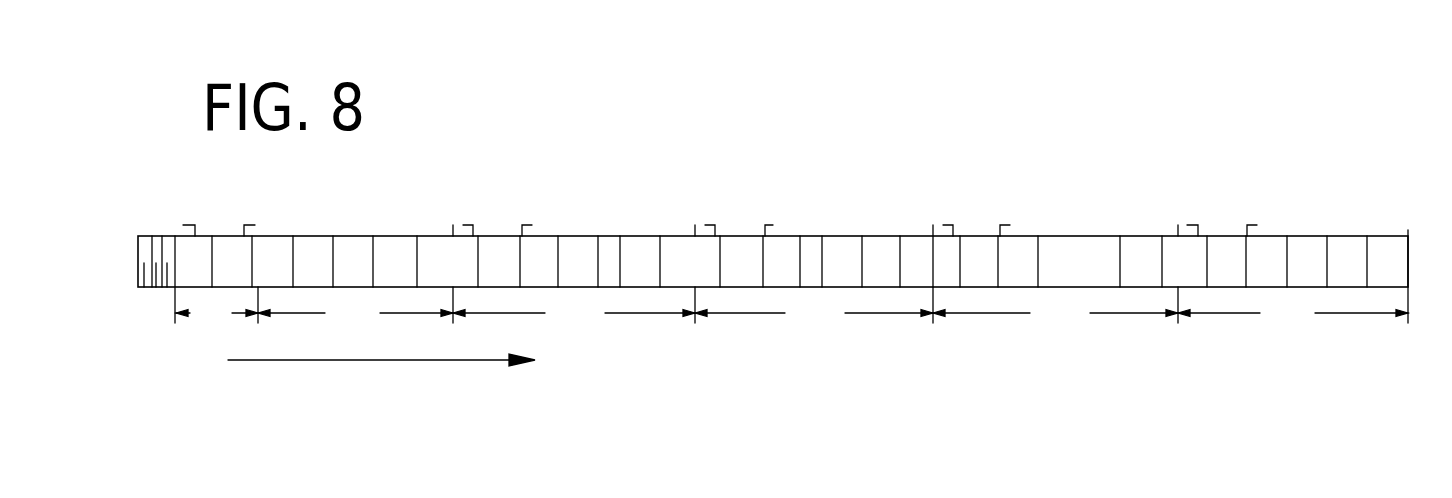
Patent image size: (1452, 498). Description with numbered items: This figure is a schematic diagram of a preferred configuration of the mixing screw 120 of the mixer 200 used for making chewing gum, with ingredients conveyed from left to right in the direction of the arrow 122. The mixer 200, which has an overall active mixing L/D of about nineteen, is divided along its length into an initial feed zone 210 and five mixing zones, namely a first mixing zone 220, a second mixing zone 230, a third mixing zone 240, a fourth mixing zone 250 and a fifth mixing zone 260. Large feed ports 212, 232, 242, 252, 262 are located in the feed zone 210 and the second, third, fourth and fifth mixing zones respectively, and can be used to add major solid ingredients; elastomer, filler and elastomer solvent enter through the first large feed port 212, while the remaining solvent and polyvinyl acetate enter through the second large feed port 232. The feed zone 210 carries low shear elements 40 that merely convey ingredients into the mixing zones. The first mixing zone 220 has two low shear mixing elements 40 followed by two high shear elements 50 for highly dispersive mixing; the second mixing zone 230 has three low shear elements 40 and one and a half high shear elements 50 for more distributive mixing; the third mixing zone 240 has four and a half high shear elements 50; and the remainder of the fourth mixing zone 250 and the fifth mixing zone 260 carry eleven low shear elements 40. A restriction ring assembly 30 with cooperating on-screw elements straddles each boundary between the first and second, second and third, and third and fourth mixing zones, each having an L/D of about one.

The restriction ring assembly 30 is at (435, 247).
The low shear mixing element 40 is at (222, 247).
The high shear mixing element 50 is at (393, 248).
The mixing screw 120 is at (1400, 270).
The arrow 122 is at (381, 373).
The mixer 200 is at (1352, 320).
The initial feed zone 210 is at (217, 313).
The first large feed port 212 is at (232, 237).
The first mixing zone 220 is at (355, 307).
The second mixing zone 230 is at (574, 307).
The second large feed port 232 is at (503, 237).
The third mixing zone 240 is at (814, 307).
The large feed port 242 is at (743, 237).
The fourth mixing zone 250 is at (1055, 313).
The large feed port 252 is at (980, 237).
The fifth mixing zone 260 is at (1293, 313).
The large feed port 262 is at (1223, 237).